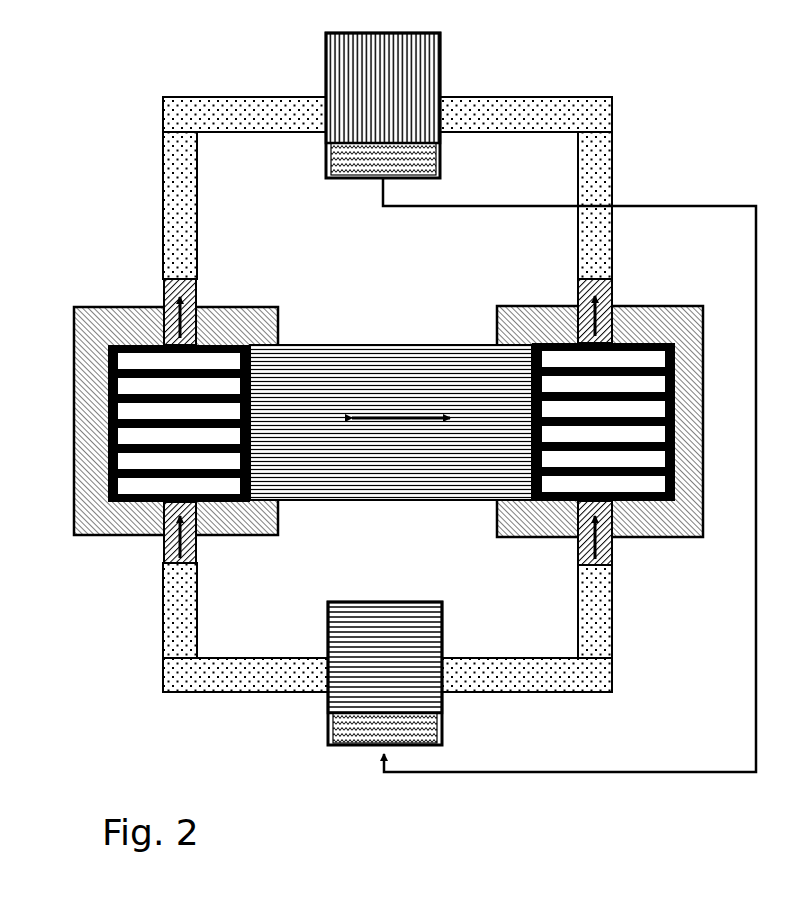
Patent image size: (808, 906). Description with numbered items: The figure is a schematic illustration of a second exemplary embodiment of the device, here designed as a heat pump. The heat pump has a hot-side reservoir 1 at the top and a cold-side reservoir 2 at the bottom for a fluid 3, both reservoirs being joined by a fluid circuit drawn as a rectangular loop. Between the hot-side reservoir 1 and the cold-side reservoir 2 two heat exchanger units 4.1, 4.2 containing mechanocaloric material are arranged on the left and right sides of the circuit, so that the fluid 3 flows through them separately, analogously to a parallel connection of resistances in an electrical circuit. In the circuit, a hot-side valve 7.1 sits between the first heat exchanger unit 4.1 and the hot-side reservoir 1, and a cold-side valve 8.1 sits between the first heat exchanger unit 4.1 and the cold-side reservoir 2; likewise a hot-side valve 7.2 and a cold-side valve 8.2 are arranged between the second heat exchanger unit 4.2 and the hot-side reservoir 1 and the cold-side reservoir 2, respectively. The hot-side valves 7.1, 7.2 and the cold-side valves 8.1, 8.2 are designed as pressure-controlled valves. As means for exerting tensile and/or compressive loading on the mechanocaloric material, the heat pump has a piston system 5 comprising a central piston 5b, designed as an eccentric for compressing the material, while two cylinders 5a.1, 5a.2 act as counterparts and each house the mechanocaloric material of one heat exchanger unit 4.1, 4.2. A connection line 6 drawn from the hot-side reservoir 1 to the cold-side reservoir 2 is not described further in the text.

The hot-side reservoir 1 is at (420, 77).
The cold-side reservoir 2 is at (378, 676).
The fluid 3 is at (432, 725).
The first heat exchanger unit 4.1 is at (217, 368).
The second heat exchanger unit 4.2 is at (563, 358).
The piston system 5 is at (388, 420).
The first cylinder 5a.1 is at (255, 528).
The second cylinder 5a.2 is at (518, 522).
The piston 5b is at (408, 363).
The electrical connection line 6 is at (756, 273).
The hot-side valve 7.1 is at (167, 292).
The hot-side valve 7.2 is at (610, 287).
The cold-side valve 8.1 is at (167, 550).
The cold-side valve 8.2 is at (612, 555).